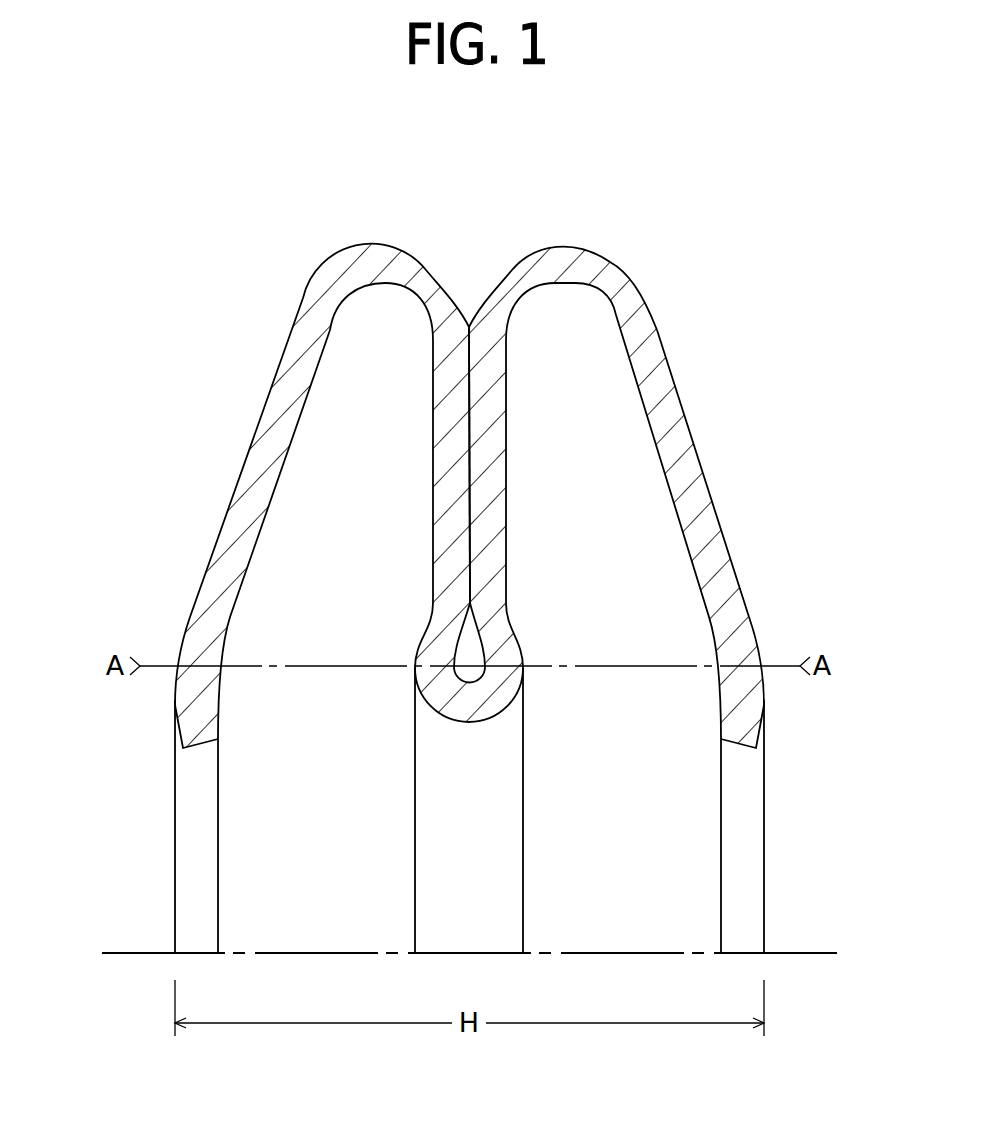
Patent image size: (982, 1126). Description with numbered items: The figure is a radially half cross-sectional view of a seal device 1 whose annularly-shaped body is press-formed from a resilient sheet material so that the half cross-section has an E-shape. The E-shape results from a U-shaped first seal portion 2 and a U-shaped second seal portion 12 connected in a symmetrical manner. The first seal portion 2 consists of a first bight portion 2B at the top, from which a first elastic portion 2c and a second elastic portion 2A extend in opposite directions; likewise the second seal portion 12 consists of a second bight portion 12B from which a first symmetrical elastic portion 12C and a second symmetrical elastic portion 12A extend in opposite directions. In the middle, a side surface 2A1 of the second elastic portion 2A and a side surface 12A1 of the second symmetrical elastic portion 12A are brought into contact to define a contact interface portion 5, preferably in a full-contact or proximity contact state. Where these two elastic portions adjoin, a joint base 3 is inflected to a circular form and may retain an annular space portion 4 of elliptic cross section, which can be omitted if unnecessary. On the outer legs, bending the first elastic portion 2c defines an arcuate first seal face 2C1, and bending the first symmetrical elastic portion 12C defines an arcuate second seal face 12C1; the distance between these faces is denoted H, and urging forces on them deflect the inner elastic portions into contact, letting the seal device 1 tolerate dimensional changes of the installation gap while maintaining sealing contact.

The seal device 1 is at (713, 277).
The first seal portion 2 is at (683, 388).
The second seal portion 12 is at (257, 387).
The second elastic portion 2A is at (507, 506).
The second symmetrical elastic portion 12A is at (433, 506).
The side surface 2A1 is at (470, 406).
The side surface 12A1 is at (473, 364).
The first bight portion 2B is at (565, 257).
The second bight portion 12B is at (384, 257).
The first elastic portion 2c is at (713, 588).
The first symmetrical elastic portion 12C is at (215, 593).
The first seal face 2C1 is at (763, 692).
The second seal face 12C1 is at (175, 690).
The joint base 3 is at (468, 704).
The annular space portion 4 is at (469, 652).
The contact interface portion 5 is at (478, 589).